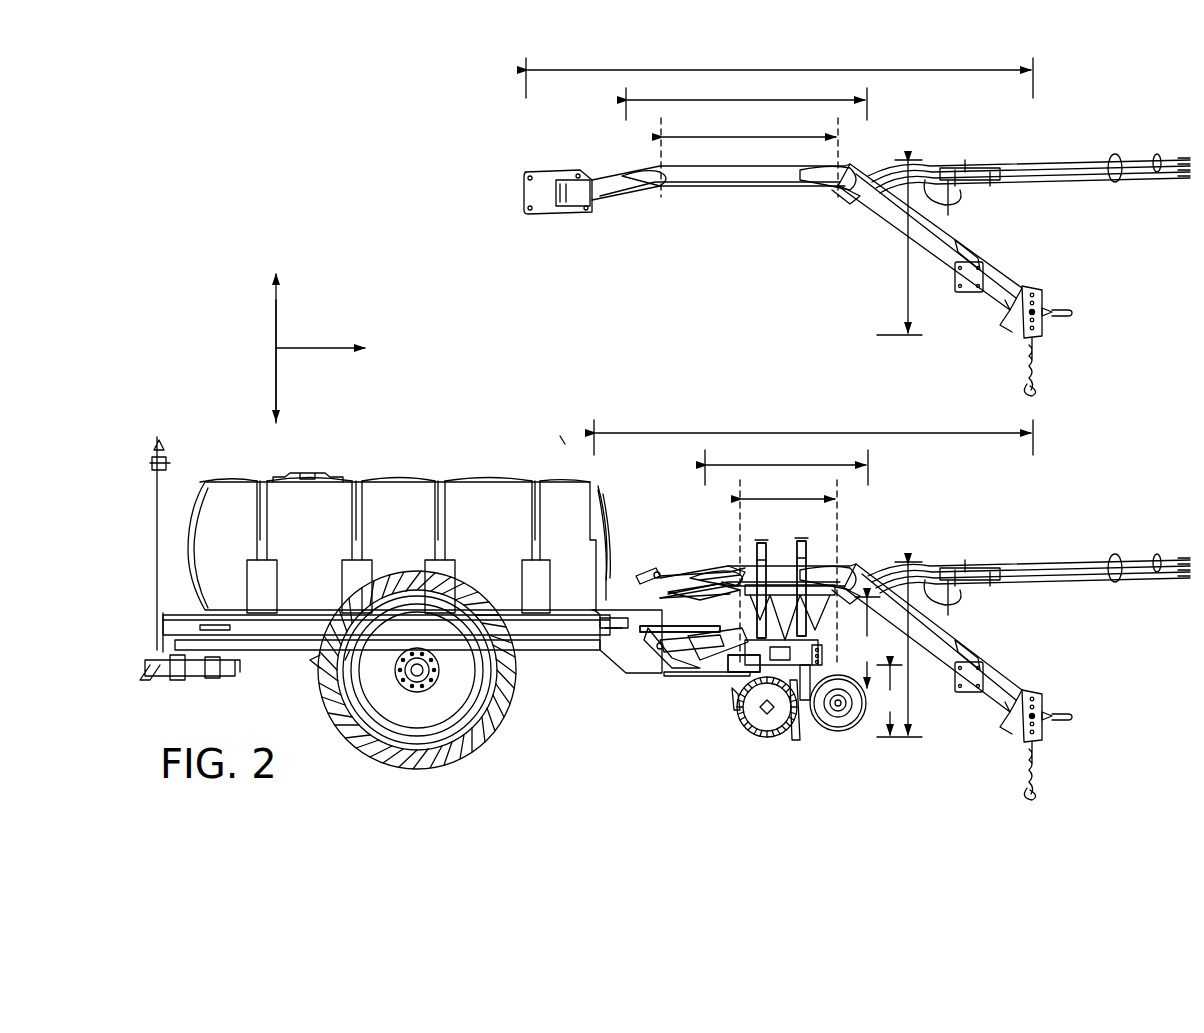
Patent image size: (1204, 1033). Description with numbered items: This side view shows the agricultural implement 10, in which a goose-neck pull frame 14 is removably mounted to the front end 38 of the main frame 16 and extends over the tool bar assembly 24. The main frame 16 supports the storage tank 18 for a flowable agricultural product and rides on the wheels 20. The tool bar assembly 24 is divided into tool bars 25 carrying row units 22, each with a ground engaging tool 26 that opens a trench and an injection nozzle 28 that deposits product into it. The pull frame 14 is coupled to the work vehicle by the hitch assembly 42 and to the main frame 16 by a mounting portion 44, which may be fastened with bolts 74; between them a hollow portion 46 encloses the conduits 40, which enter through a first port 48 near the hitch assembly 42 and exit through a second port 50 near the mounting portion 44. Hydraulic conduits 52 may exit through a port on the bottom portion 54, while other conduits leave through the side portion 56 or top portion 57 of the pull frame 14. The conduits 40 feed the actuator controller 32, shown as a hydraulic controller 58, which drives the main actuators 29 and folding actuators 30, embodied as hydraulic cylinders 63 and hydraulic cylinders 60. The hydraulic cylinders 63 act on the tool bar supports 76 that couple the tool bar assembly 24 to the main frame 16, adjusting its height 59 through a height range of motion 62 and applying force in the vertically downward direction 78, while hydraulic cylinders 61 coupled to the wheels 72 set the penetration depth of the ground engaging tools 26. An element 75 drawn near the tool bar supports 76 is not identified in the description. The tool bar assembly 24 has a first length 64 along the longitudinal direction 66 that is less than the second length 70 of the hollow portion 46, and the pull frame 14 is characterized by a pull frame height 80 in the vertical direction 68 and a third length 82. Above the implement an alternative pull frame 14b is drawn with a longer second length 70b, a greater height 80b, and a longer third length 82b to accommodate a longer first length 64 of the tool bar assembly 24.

The agricultural implement 10 is at (532, 438).
The pull frame 14 is at (955, 650).
The pull frame 14b is at (960, 250).
The main frame 16 is at (300, 640).
The storage tank 18 is at (228, 490).
The wheels 20 is at (326, 722).
The row units 22 is at (760, 736).
The tool bar assembly 24 is at (826, 642).
The tool bars 25 is at (728, 670).
The ground engaging tool 26 is at (786, 736).
The injection nozzle 28 is at (736, 700).
The main actuators 29 is at (735, 660).
The folding actuators 30 is at (800, 542).
The actuator controller 32 is at (652, 626).
The front end 38 is at (600, 688).
The conduits 40 is at (1113, 152).
The hitch assembly 42 is at (1034, 288).
The mounting portion 44 is at (664, 578).
The hollow portion 46 is at (848, 190).
The first port 48 is at (878, 168).
The second port 50 is at (676, 592).
The hydraulic conduits 52 is at (1153, 152).
The bottom portion 54 is at (738, 560).
The side portion 56 is at (686, 580).
The top portion 57 is at (698, 578).
The hydraulic controller 58 is at (680, 629).
The height 59 is at (889, 700).
The hydraulic cylinders 60 is at (781, 589).
The hydraulic cylinders 61 is at (806, 736).
The height range of motion 62 is at (865, 642).
The hydraulic cylinders 63 is at (744, 663).
The first length 64 is at (790, 136).
The longitudinal direction 66 is at (316, 348).
The vertical direction 68 is at (276, 318).
The second length 70 is at (800, 465).
The second length 70b is at (652, 104).
The wheels 72 is at (842, 726).
The bolts 74 is at (652, 574).
The lower link 75 is at (690, 680).
The tool bar supports 76 is at (680, 676).
The vertically downward direction 78 is at (276, 380).
The pull frame height 80 is at (910, 672).
The height 80b is at (908, 272).
The third length 82 is at (745, 432).
The third length 82b is at (933, 72).